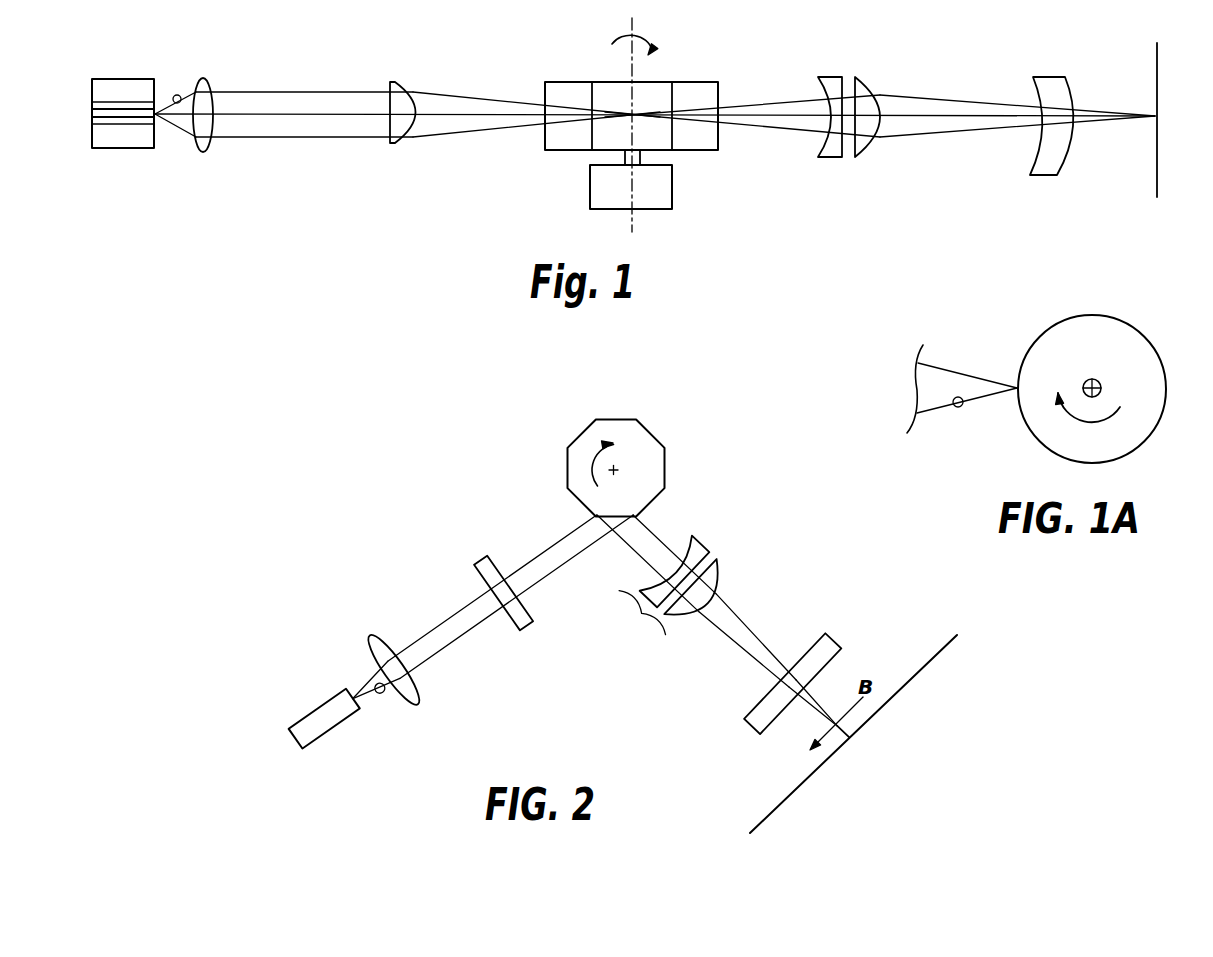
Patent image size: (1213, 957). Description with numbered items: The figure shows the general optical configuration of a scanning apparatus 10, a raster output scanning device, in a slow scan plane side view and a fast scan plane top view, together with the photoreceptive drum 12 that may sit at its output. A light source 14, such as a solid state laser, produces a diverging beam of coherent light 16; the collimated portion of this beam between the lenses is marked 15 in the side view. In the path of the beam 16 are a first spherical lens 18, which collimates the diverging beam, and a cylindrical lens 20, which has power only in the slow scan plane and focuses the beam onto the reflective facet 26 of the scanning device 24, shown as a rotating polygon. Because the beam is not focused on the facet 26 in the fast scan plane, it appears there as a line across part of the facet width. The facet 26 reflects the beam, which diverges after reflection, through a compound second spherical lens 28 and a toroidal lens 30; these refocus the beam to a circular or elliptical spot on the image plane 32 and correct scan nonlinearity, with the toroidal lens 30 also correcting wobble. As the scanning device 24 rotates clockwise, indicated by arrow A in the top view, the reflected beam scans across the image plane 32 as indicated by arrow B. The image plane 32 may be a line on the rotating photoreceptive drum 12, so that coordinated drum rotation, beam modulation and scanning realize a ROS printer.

In FIG. 1, the scanning apparatus 10 is at (294, 189).
In FIG. 2, the scanning apparatus 10 is at (403, 545).
In FIG. 1A, the photoreceptive drum 12 is at (1035, 337).
In FIG. 1, the light source 14 is at (121, 79).
In FIG. 2, the light source 14 is at (328, 738).
In FIG. 1, the collimated light beam 15 is at (325, 112).
In FIG. 1, the beam of coherent light 16 is at (180, 96).
In FIG. 1A, the beam of coherent light 16 is at (962, 407).
In FIG. 2, the beam of coherent light 16 is at (383, 694).
In FIG. 1, the first spherical lens 18 is at (206, 80).
In FIG. 2, the first spherical lens 18 is at (422, 698).
In FIG. 1, the cylindrical lens 20 is at (395, 82).
In FIG. 2, the cylindrical lens 20 is at (524, 622).
In FIG. 1, the scanning device 24 is at (562, 152).
In FIG. 2, the scanning device 24 is at (652, 433).
In FIG. 1, the reflective facet 26 is at (661, 82).
In FIG. 1, the second spherical lens 28 is at (813, 64).
In FIG. 2, the second spherical lens 28 is at (641, 614).
In FIG. 1, the toroidal lens 30 is at (1052, 77).
In FIG. 2, the toroidal lens 30 is at (747, 721).
In FIG. 1, the image plane 32 is at (1157, 170).
In FIG. 2, the image plane 32 is at (924, 667).